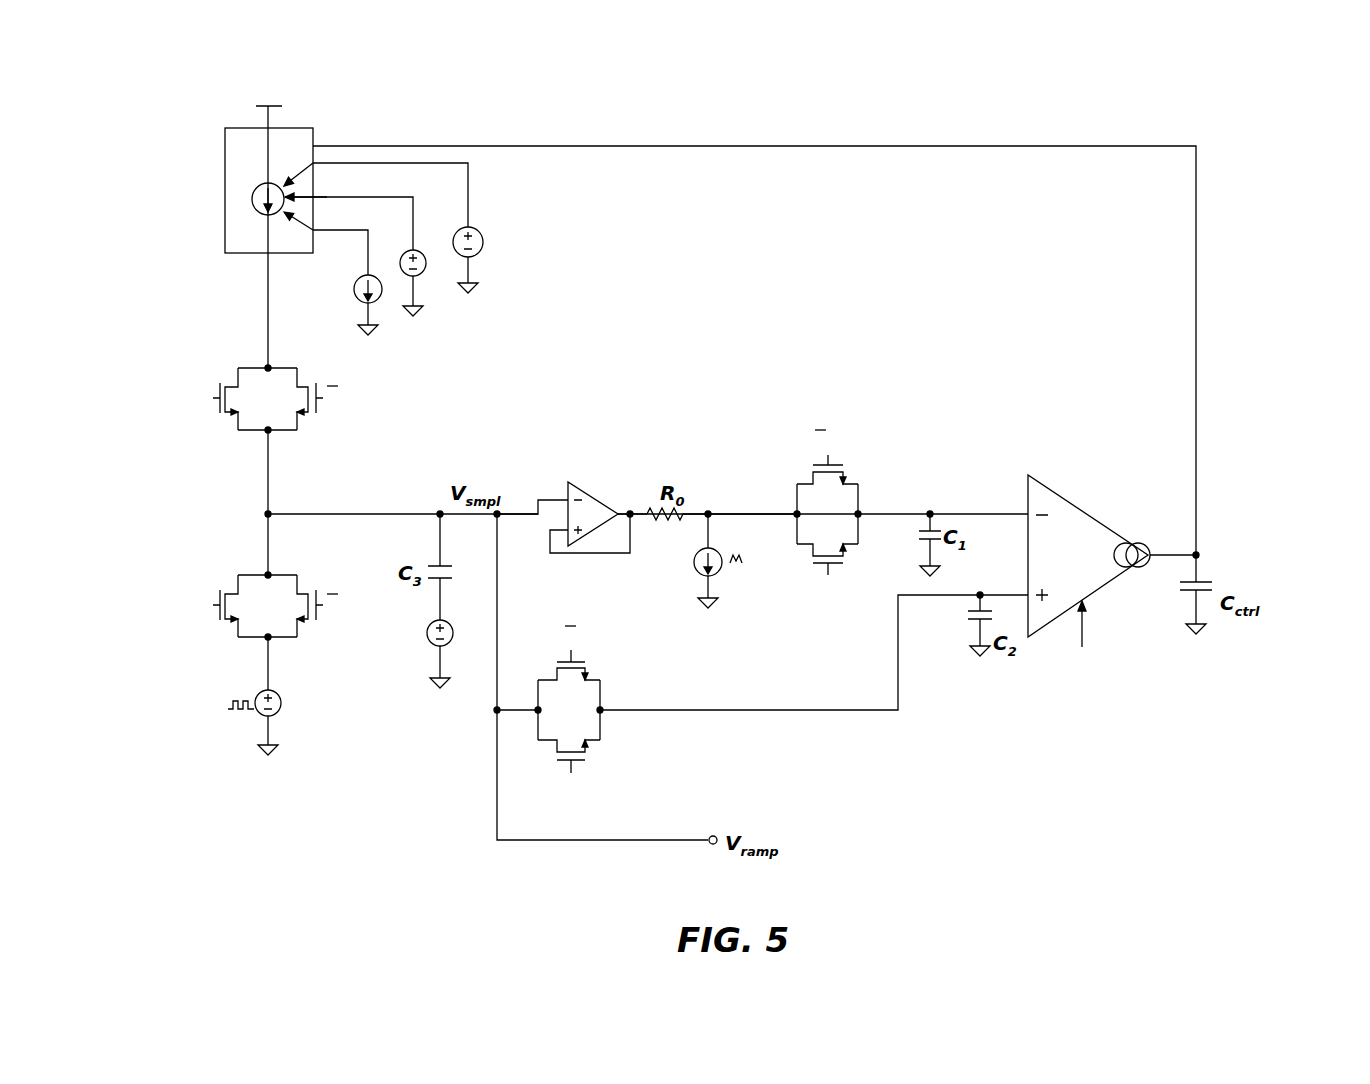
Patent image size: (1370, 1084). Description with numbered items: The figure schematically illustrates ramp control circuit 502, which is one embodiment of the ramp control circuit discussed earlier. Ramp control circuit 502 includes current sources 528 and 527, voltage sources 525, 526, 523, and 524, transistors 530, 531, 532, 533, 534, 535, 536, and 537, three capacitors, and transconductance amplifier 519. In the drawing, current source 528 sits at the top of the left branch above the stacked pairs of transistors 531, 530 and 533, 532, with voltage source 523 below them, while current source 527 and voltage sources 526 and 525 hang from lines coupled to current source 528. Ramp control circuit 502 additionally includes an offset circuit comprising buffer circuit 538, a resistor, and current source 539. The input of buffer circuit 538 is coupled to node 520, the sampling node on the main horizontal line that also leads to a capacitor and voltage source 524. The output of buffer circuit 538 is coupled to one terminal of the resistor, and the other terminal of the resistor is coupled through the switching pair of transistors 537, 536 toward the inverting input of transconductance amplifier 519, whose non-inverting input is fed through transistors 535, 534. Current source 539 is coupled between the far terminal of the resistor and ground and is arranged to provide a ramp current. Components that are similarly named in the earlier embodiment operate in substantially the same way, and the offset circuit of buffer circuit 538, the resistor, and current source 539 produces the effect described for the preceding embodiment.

The ramp control circuit 502 is at (1182, 111).
The transconductance amplifier 519 is at (1063, 498).
The sampling node N520 520 is at (440, 508).
The voltage source 523 is at (278, 718).
The voltage source 524 is at (428, 647).
The voltage source 525 is at (484, 250).
The voltage source 526 is at (418, 277).
The current source 527 is at (373, 305).
The current source 528 is at (225, 245).
The transistor 530 is at (300, 427).
The transistor 531 is at (233, 427).
The transistor 532 is at (322, 552).
The transistor 533 is at (233, 578).
The transistor 534 is at (583, 745).
The transistor 535 is at (562, 662).
The transistor 536 is at (850, 548).
The transistor 537 is at (840, 470).
The buffer circuit 538 is at (610, 500).
The current source 539 is at (690, 568).